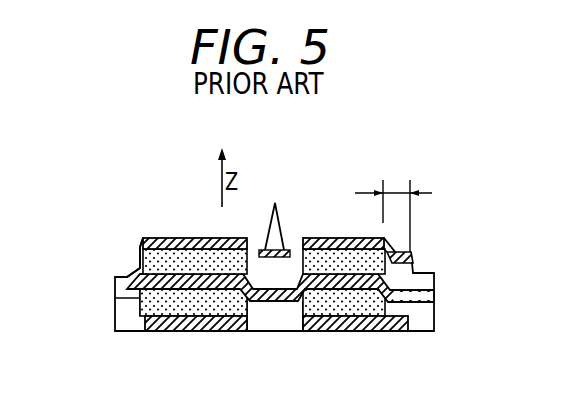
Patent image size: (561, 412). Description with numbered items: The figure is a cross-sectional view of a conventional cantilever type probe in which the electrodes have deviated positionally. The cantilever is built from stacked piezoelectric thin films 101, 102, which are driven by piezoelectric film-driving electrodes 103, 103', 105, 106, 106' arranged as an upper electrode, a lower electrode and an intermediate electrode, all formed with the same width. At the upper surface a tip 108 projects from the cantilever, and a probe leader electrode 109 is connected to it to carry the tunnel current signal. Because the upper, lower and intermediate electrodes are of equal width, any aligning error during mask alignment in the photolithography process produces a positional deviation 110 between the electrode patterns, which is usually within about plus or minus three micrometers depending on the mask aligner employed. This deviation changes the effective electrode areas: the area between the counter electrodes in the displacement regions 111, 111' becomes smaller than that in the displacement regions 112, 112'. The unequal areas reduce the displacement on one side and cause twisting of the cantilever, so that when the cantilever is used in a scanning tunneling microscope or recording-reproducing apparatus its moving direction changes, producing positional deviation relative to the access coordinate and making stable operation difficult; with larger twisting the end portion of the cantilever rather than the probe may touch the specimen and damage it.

The piezoelectric thin film 101 is at (434, 321).
The piezoelectric thin film 102 is at (434, 292).
The piezoelectric film-driving electrode 103 is at (110, 238).
The piezoelectric film-driving electrode 103' is at (432, 244).
The piezoelectric film-driving electrode 105 is at (117, 296).
The piezoelectric film-driving electrode 106 is at (184, 357).
The piezoelectric film-driving electrode 106' is at (373, 357).
The tip 108 is at (266, 240).
The probe leader electrode 109 is at (297, 240).
The positional deviation 110 is at (396, 193).
The displacement region 111 is at (355, 334).
The displacement region 111' is at (345, 228).
The displacement region 112 is at (193, 334).
The displacement region 112' is at (195, 228).